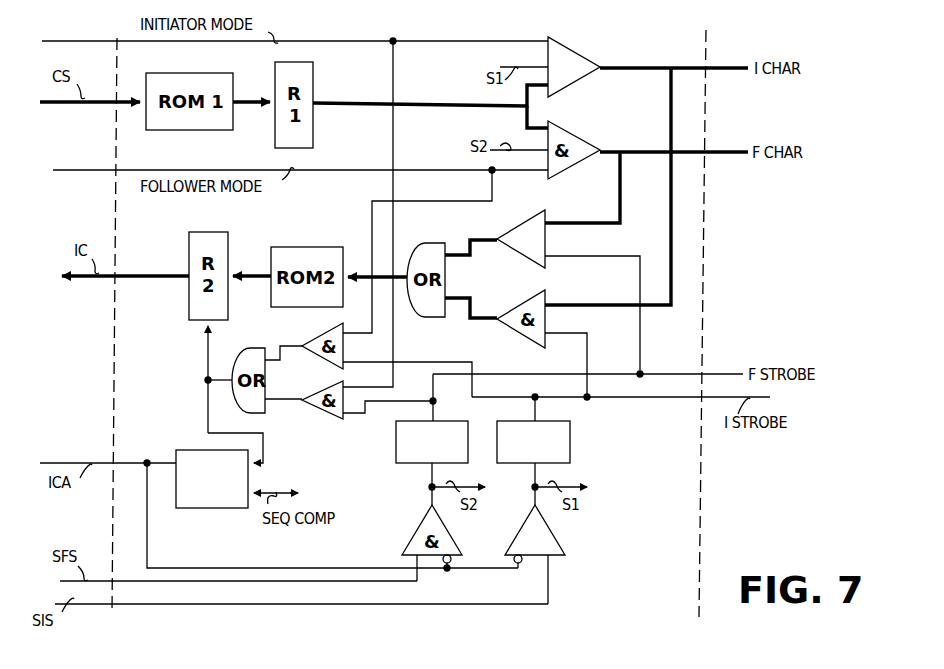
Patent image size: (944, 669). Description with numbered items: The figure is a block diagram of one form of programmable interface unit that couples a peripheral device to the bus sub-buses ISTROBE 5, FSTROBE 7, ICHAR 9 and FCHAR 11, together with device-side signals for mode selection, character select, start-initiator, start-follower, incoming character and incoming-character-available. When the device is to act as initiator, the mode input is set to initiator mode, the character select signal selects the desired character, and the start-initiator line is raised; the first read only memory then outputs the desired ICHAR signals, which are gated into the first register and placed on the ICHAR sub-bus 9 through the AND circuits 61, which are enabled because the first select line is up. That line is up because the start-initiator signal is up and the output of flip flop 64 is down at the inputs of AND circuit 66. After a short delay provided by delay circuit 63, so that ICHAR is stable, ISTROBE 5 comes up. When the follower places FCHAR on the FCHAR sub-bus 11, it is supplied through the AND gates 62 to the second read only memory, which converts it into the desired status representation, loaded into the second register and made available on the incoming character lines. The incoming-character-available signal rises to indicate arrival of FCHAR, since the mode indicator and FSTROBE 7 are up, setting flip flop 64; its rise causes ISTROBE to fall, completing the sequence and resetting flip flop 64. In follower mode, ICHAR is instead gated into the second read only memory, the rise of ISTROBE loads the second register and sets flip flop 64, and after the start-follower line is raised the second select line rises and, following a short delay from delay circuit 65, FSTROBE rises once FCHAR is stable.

The AND circuits 61 is at (566, 46).
The ICHAR sub-bus 9 is at (692, 68).
The FCHAR sub-bus 11 is at (661, 151).
The AND gates 62 is at (531, 217).
The FSTROBE sub-bus 7 is at (680, 374).
The ISTROBE sub-bus 5 is at (647, 400).
The flip flop 64 is at (190, 450).
The delay circuit 65 is at (396, 439).
The delay circuit 63 is at (570, 440).
The AND circuit 66 is at (576, 525).